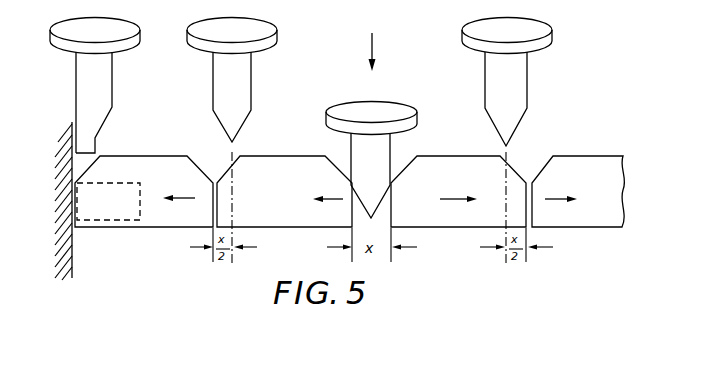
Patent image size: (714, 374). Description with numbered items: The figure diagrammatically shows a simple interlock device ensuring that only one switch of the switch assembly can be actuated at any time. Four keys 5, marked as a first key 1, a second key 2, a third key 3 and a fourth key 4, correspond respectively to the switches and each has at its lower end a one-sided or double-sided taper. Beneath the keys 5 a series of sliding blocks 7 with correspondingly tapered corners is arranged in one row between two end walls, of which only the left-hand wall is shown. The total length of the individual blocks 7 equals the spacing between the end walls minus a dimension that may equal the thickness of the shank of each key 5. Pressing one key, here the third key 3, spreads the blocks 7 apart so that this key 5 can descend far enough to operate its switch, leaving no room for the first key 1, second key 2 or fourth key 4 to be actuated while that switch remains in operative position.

The first key 1 is at (95, 86).
The second key 2 is at (232, 80).
The third key 3 is at (371, 159).
The fourth key 4 is at (507, 82).
The key 5 is at (305, 118).
The sliding block 7 is at (157, 220).